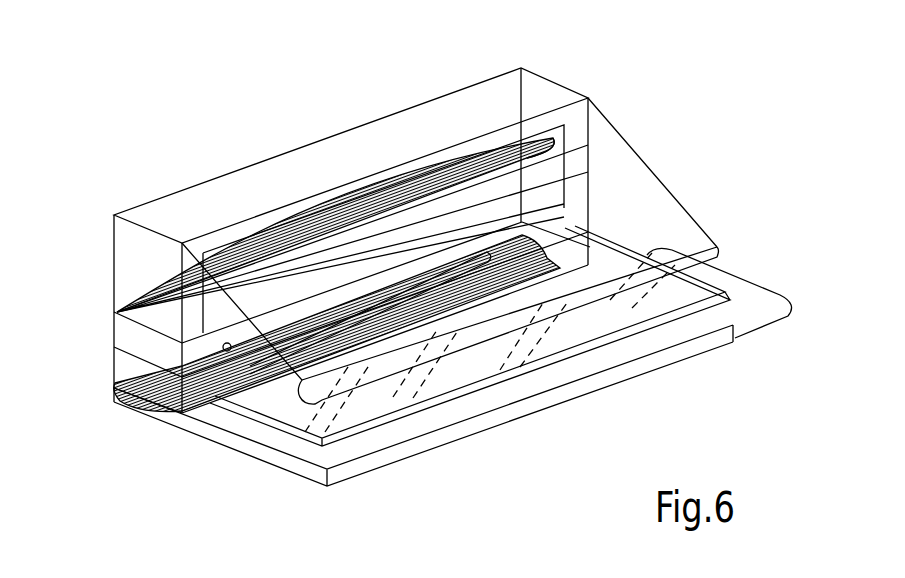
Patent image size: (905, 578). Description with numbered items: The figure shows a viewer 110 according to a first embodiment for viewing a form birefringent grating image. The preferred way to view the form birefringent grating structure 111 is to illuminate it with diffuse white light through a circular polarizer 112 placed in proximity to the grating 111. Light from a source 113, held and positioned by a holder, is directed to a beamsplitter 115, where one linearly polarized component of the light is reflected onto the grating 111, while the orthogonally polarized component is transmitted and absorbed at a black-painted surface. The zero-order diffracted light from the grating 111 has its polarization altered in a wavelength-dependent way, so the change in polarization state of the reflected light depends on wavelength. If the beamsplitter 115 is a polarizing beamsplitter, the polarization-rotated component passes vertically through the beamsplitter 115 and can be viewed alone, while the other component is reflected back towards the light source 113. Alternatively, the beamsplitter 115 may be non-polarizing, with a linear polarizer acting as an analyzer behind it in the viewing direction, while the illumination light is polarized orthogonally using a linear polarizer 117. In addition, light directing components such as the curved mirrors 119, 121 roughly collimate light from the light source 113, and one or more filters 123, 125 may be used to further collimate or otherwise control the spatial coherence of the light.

The viewer 110 is at (490, 92).
The form birefringent grating structure 111 is at (771, 292).
The circular polarizer 112 is at (690, 307).
The light source 113 is at (245, 380).
The beamsplitter 115 is at (668, 200).
The linear polarizer 117 is at (552, 160).
The curved mirror 119 is at (124, 378).
The curved mirror 121 is at (175, 265).
The filter 123 is at (128, 340).
The filter 125 is at (128, 300).